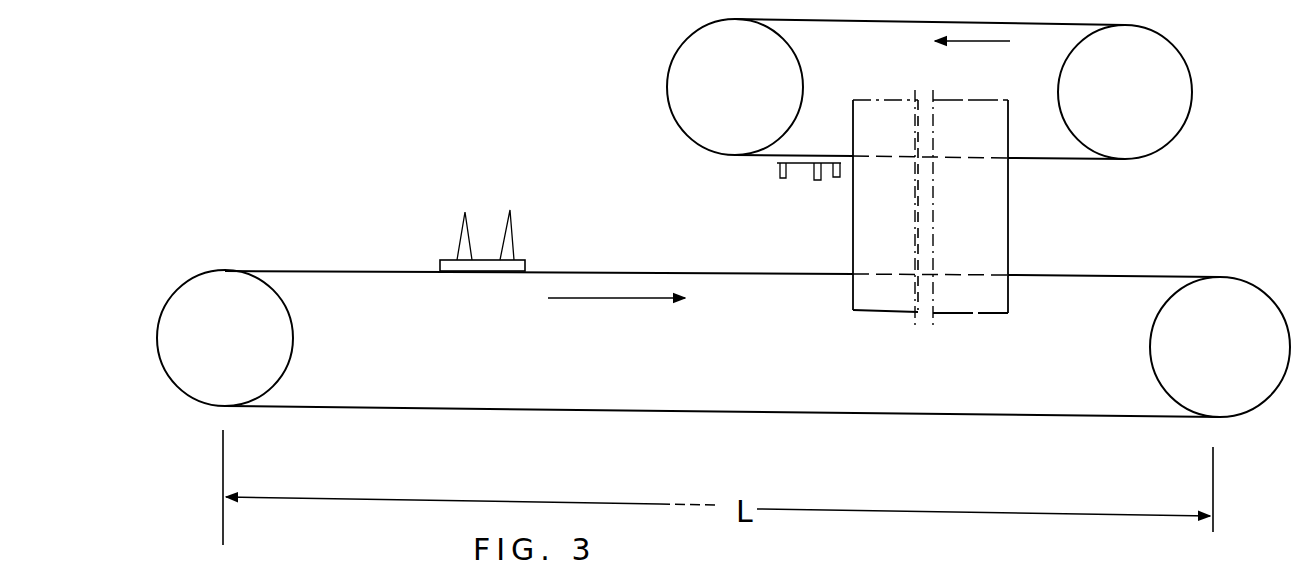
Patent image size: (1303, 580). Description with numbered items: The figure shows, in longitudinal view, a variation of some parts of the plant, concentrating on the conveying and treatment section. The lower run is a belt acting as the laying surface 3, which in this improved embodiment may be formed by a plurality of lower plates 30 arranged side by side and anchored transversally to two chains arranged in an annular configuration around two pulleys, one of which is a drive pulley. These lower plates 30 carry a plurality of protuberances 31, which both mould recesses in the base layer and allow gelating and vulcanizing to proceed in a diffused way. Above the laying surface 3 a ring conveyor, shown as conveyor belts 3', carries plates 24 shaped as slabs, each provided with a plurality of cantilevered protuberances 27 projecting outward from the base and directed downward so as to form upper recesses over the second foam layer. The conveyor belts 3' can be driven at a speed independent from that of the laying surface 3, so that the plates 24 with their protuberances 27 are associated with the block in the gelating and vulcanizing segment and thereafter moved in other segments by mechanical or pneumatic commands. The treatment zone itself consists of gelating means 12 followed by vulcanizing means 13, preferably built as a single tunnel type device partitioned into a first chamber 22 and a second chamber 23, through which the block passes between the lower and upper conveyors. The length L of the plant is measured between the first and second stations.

The laying surface 3 is at (723, 343).
The conveyor belts 3' is at (929, 89).
The lower plates 30 is at (413, 244).
The protuberances 31 is at (509, 212).
The plates 24 is at (770, 167).
The cantilevered protuberances 27 is at (814, 181).
The first chamber 22 is at (885, 210).
The second chamber 23 is at (970, 210).
The gelating means 12 is at (872, 222).
The vulcanizing means 13 is at (996, 246).